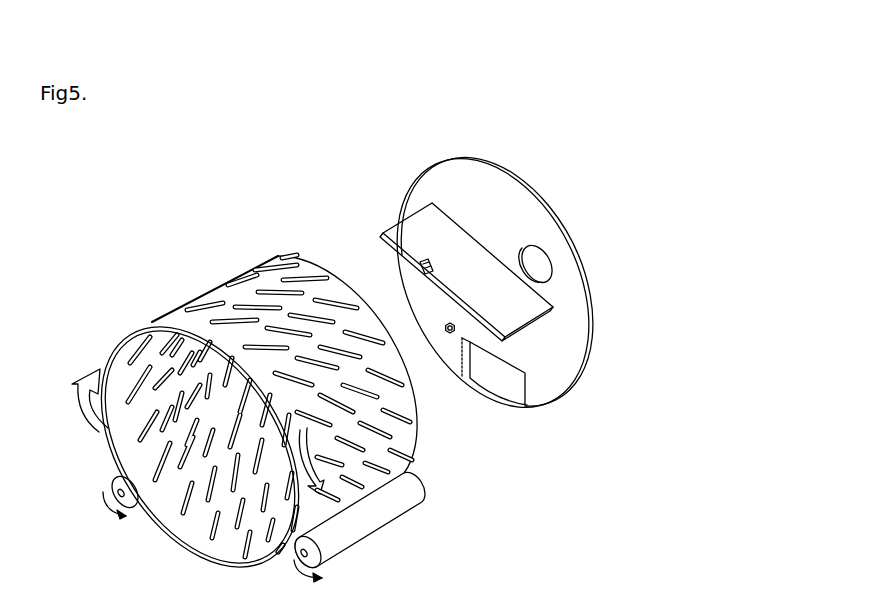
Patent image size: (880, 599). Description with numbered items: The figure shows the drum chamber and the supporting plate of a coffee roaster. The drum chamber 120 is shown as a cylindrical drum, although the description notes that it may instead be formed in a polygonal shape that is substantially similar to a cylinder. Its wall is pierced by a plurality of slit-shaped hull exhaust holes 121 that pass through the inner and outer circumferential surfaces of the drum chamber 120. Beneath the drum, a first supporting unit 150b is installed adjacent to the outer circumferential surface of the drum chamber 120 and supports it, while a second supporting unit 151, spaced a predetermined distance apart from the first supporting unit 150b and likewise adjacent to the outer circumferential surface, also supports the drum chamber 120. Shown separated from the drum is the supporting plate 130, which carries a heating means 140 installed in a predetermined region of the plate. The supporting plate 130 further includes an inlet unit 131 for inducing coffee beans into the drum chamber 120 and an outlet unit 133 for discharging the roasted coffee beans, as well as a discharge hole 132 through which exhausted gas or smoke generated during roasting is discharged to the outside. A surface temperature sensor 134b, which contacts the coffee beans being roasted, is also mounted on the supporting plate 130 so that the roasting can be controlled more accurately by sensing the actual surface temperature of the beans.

The drum chamber 120 is at (165, 320).
The slit-shaped hull exhaust holes 121 is at (243, 268).
The supporting plate 130 is at (418, 188).
The inlet unit 131 is at (420, 267).
The discharge hole 132 is at (543, 260).
The outlet unit 133 is at (488, 375).
The surface temperature sensor 134b is at (449, 338).
The heating means 140 is at (392, 232).
The first supporting unit 150b is at (378, 528).
The second supporting unit 151 is at (118, 488).